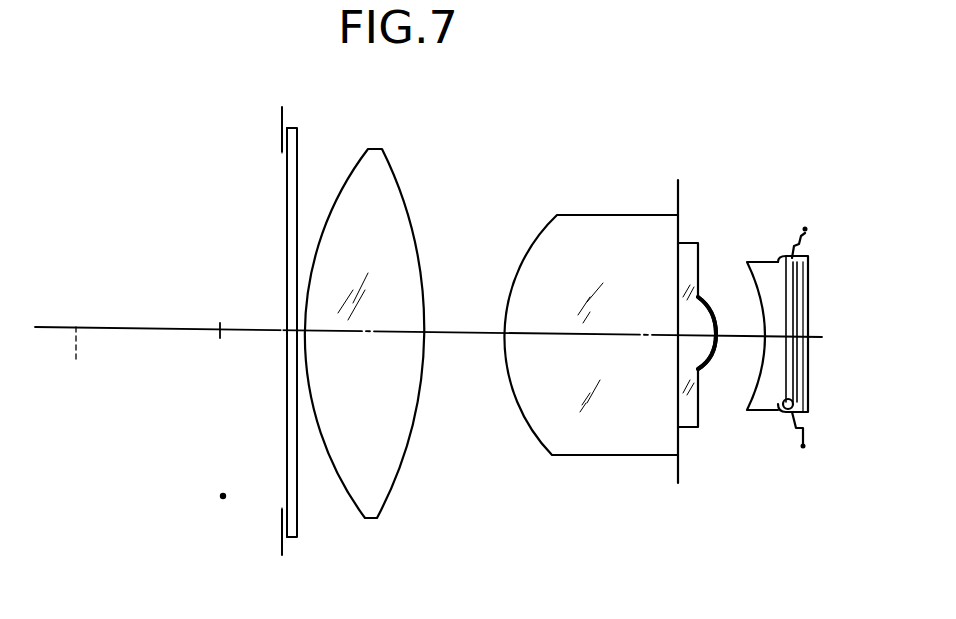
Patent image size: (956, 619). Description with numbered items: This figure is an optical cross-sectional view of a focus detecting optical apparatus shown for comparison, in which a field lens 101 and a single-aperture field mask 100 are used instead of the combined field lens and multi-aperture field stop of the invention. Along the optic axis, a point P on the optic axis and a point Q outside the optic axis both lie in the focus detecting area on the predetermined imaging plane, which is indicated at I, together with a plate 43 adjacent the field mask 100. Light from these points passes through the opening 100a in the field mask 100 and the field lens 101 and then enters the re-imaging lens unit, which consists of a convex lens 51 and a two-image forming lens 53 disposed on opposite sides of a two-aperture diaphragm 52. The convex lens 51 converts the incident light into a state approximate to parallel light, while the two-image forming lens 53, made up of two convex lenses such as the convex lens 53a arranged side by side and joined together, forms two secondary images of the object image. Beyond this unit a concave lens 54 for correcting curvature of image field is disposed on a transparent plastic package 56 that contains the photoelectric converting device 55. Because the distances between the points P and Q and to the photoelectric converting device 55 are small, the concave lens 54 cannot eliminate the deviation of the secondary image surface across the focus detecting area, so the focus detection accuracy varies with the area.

The image plane I is at (74, 360).
The point on the optic axis P is at (220, 332).
The point outside the optic axis Q is at (221, 497).
The single-aperture field mask 100 is at (280, 538).
The opening in the field mask 100a is at (281, 192).
The filter plate 43 is at (291, 537).
The field lens 101 is at (388, 494).
The convex lens 51 is at (549, 434).
The two-aperture diaphragm 52 is at (672, 467).
The two-image forming lens 53 is at (688, 430).
The convex lens 53a is at (712, 303).
The concave lens 54 is at (747, 378).
The photoelectric converting device 55 is at (776, 388).
The transparent plastic package 56 is at (808, 412).